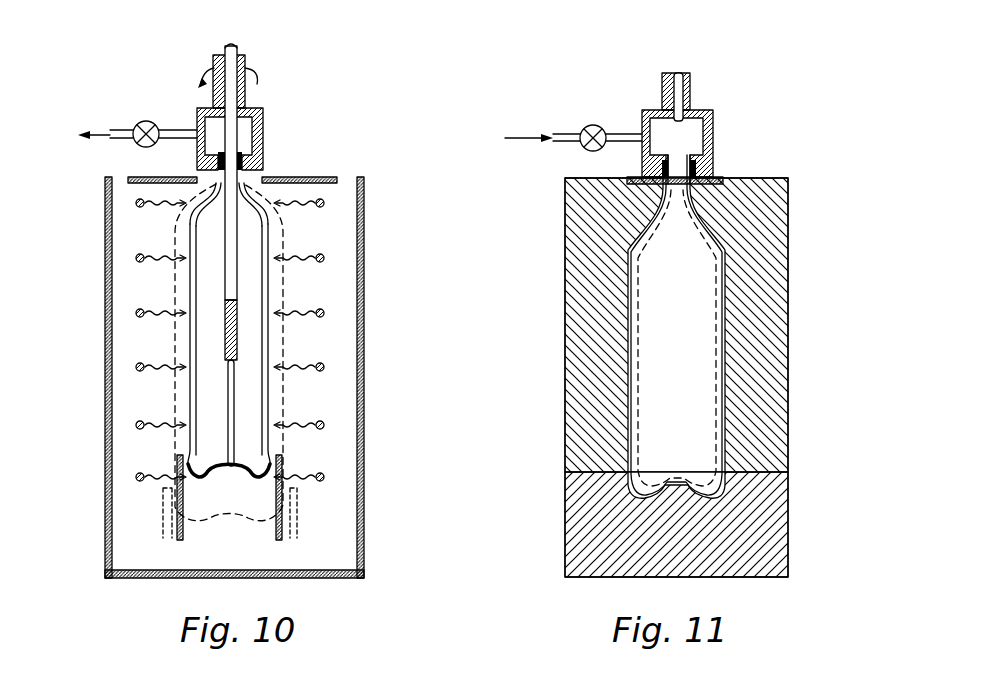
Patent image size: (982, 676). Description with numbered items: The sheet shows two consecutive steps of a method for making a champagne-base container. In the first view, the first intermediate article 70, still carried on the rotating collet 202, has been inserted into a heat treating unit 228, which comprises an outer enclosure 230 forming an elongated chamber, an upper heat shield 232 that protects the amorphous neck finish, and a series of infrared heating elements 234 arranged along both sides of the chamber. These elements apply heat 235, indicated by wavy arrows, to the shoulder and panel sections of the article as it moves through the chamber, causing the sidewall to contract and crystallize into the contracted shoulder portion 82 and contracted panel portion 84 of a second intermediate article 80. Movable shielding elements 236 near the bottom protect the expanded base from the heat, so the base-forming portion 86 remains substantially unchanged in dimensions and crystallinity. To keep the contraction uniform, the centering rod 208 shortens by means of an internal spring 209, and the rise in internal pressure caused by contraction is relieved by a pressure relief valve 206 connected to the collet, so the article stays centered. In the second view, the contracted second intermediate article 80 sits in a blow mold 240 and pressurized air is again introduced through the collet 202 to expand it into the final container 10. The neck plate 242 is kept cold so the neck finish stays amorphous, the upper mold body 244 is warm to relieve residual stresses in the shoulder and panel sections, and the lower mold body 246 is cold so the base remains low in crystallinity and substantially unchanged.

In FIG. 10, the pressure relief valve 206 is at (146, 121).
In FIG. 11, the pressure relief valve 206 is at (581, 126).
In FIG. 10, the rotating collet 202 is at (265, 126).
In FIG. 11, the rotating collet 202 is at (714, 122).
In FIG. 10, the upper heat shield 232 is at (300, 177).
In FIG. 10, the contracted shoulder portion 82 is at (263, 204).
In FIG. 10, the first intermediate article 70 is at (298, 229).
In FIG. 10, the second intermediate article 80 is at (276, 290).
In FIG. 11, the second intermediate article 80 is at (730, 313).
In FIG. 10, the heat treating unit 228 is at (366, 321).
In FIG. 10, the contracted panel portion 84 is at (266, 340).
In FIG. 10, the infrared heating elements 234 is at (136, 262).
In FIG. 10, the outer enclosure 230 is at (365, 416).
In FIG. 10, the base-forming portion 86 is at (272, 469).
In FIG. 10, the heat 235 is at (156, 243).
In FIG. 10, the internal spring 209 is at (224, 332).
In FIG. 10, the centering rod 208 is at (226, 404).
In FIG. 10, the shielding elements 236 is at (178, 540).
In FIG. 11, the neck plate 242 is at (724, 178).
In FIG. 11, the blow mold 240 is at (798, 218).
In FIG. 11, the upper mold body 244 is at (790, 248).
In FIG. 11, the final container 10 is at (736, 343).
In FIG. 11, the lower mold body 246 is at (788, 493).